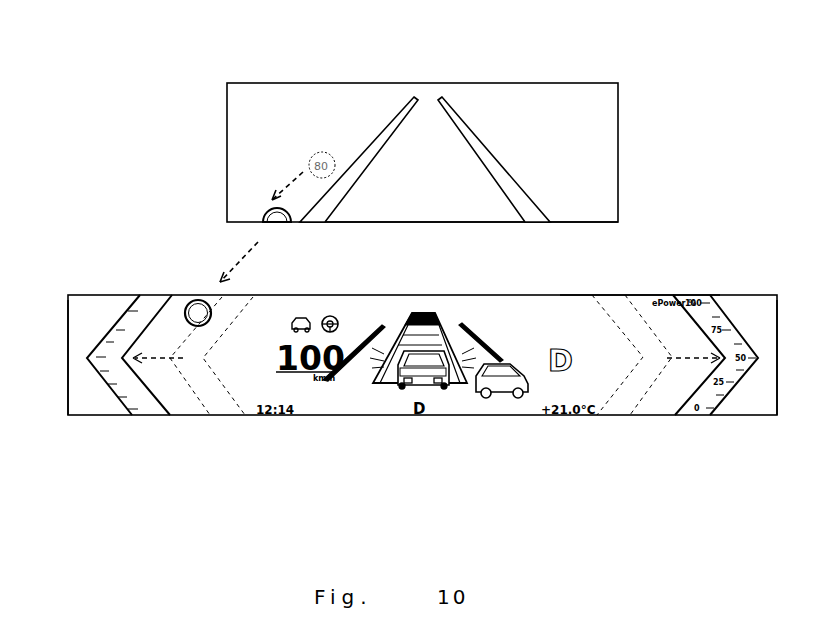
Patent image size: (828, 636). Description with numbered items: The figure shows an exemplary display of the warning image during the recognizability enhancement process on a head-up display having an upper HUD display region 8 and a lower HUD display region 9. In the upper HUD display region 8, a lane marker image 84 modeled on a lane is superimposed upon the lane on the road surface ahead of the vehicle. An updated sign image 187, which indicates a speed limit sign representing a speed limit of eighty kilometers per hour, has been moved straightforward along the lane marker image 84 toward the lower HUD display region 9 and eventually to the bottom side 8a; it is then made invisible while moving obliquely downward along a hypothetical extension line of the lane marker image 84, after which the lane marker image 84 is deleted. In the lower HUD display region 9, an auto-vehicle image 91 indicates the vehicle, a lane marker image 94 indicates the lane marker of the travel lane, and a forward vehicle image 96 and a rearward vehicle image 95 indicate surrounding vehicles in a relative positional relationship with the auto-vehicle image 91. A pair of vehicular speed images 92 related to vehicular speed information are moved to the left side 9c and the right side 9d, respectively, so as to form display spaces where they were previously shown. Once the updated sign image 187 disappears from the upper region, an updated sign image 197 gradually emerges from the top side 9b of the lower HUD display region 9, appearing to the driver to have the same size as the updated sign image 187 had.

The upper HUD display region 8 is at (618, 141).
The bottom side of the upper HUD display region 8a is at (573, 222).
The lane marker image 84 is at (393, 112).
The updated sign image 187 is at (281, 225).
The lower HUD display region 9 is at (729, 295).
The top side of the lower HUD display region 9b is at (642, 295).
The left side of the lower HUD display region 9c is at (72, 393).
The right side of the lower HUD display region 9d is at (777, 393).
The vehicular speed image 92 is at (138, 415).
The updated sign image 197 is at (190, 298).
The lane marker image 94 is at (495, 342).
The forward vehicle image 96 is at (427, 308).
The auto-vehicle image 91 is at (418, 386).
The rearward vehicle image 95 is at (505, 393).